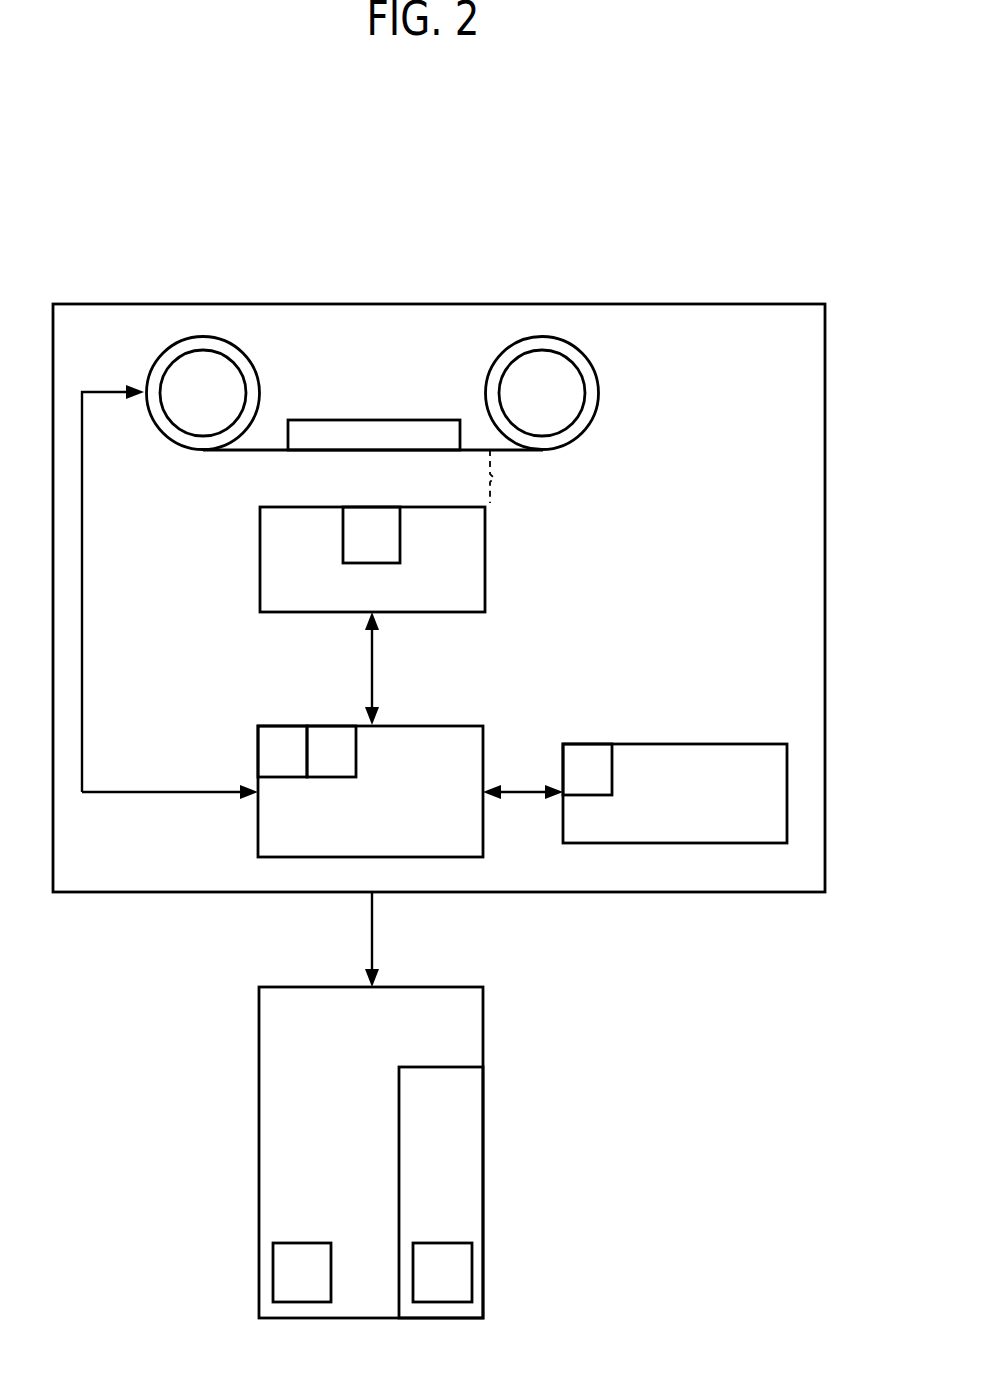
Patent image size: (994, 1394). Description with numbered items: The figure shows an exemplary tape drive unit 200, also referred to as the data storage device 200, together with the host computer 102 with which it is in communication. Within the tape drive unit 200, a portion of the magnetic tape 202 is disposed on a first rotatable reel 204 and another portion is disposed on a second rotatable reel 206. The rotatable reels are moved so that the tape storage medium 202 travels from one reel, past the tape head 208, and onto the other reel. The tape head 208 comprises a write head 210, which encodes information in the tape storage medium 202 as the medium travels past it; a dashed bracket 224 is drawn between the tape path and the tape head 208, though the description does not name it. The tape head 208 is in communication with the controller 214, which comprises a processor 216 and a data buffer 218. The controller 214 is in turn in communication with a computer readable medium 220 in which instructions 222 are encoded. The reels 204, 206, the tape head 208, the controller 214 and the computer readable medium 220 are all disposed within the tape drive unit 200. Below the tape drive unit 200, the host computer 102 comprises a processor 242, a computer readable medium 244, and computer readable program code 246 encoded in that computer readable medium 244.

The tape drive unit 200 is at (672, 205).
The magnetic tape 202 is at (250, 449).
The reel 204 is at (207, 336).
The reel 206 is at (556, 336).
The tape head 208 is at (260, 530).
The write head 210 is at (354, 552).
The controller 214 is at (450, 725).
The processor 216 is at (300, 766).
The data buffer 218 is at (349, 766).
The computer readable medium 220 is at (620, 744).
The instructions 222 is at (605, 779).
The tape-head gap 224 is at (513, 476).
The host computer 102 is at (352, 1152).
The processor 242 is at (284, 1284).
The computer readable medium 244 is at (441, 1192).
The computer readable program code 246 is at (424, 1284).